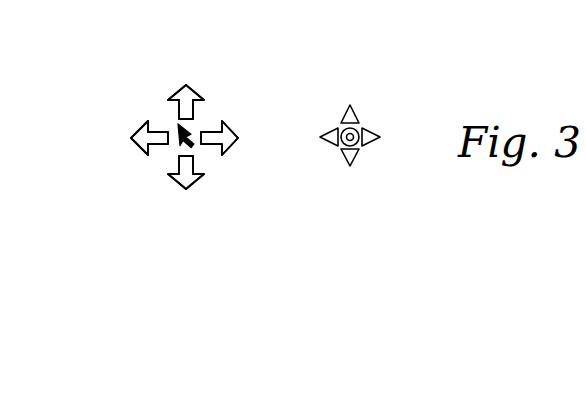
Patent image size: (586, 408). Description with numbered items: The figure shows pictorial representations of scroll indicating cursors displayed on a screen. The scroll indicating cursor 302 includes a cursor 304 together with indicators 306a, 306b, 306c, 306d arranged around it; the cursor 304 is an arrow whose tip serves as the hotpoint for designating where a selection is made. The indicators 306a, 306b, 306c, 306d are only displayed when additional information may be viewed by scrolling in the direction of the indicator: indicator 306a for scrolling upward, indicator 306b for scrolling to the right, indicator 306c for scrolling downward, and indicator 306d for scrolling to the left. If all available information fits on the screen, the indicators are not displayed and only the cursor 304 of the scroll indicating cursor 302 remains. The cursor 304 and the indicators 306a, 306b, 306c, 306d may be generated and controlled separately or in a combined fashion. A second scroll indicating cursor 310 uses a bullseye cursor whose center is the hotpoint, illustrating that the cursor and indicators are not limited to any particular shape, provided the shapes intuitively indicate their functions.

The scroll indicating cursor 302 is at (128, 89).
The cursor 304 is at (176, 142).
The indicator 306a is at (200, 94).
The indicator 306b is at (233, 131).
The indicator 306c is at (196, 183).
The indicator 306d is at (131, 136).
The scroll indicating cursor 310 is at (376, 108).